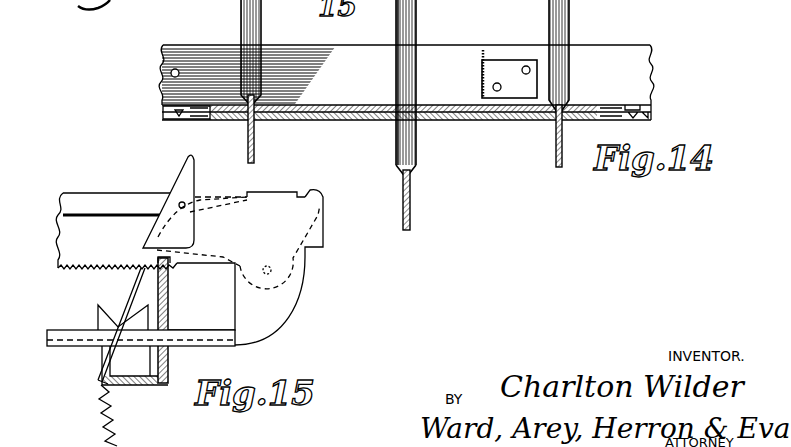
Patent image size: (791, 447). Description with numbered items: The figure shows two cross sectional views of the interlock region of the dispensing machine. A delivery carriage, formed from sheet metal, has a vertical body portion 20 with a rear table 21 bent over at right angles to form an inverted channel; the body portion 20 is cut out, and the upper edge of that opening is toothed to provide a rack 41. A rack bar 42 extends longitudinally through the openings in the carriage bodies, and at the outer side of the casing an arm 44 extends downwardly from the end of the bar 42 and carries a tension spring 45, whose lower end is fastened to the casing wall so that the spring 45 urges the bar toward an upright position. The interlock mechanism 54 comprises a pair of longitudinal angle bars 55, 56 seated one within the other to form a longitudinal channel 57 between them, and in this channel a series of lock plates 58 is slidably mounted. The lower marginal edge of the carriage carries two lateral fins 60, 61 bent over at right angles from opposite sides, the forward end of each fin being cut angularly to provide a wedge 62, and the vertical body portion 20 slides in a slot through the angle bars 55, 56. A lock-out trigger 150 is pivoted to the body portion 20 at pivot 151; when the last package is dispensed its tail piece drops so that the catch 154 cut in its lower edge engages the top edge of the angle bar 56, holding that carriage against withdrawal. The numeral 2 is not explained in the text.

In FIG. 14, the saw blade 2 is at (400, 216).
In FIG. 14, the vertical body portion 20 is at (254, 143).
In FIG. 15, the vertical body portion 20 is at (282, 312).
In FIG. 15, the rear table 21 is at (131, 184).
In FIG. 15, the rack 41 is at (92, 270).
In FIG. 15, the rack bar 42 is at (140, 283).
In FIG. 15, the arm 44 is at (107, 357).
In FIG. 15, the tension spring 45 is at (100, 420).
In FIG. 15, the interlock mechanism 54 is at (165, 388).
In FIG. 14, the angle bar 55 is at (380, 120).
In FIG. 15, the angle bar 55 is at (194, 182).
In FIG. 14, the angle bar 56 is at (373, 106).
In FIG. 15, the angle bar 56 is at (157, 262).
In FIG. 14, the longitudinal channel 57 is at (577, 111).
In FIG. 15, the longitudinal channel 57 is at (172, 318).
In FIG. 14, the lock plate 58 is at (460, 120).
In FIG. 15, the lock plate 58 is at (172, 375).
In FIG. 14, the lateral fin 60 is at (415, 82).
In FIG. 15, the lateral fin 60 is at (88, 347).
In FIG. 14, the lateral fin 61 is at (397, 57).
In FIG. 15, the lateral fin 61 is at (90, 330).
In FIG. 14, the wedge 62 is at (263, 101).
In FIG. 15, the wedge 62 is at (200, 312).
In FIG. 15, the lock-out trigger 150 is at (327, 196).
In FIG. 15, the pivot 151 is at (267, 266).
In FIG. 15, the catch 154 is at (226, 258).